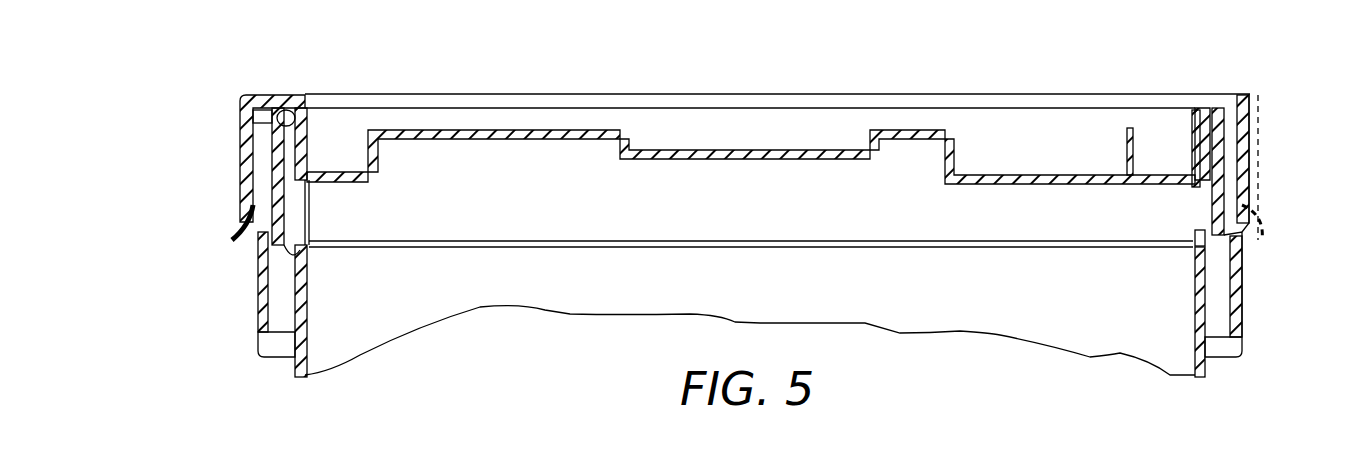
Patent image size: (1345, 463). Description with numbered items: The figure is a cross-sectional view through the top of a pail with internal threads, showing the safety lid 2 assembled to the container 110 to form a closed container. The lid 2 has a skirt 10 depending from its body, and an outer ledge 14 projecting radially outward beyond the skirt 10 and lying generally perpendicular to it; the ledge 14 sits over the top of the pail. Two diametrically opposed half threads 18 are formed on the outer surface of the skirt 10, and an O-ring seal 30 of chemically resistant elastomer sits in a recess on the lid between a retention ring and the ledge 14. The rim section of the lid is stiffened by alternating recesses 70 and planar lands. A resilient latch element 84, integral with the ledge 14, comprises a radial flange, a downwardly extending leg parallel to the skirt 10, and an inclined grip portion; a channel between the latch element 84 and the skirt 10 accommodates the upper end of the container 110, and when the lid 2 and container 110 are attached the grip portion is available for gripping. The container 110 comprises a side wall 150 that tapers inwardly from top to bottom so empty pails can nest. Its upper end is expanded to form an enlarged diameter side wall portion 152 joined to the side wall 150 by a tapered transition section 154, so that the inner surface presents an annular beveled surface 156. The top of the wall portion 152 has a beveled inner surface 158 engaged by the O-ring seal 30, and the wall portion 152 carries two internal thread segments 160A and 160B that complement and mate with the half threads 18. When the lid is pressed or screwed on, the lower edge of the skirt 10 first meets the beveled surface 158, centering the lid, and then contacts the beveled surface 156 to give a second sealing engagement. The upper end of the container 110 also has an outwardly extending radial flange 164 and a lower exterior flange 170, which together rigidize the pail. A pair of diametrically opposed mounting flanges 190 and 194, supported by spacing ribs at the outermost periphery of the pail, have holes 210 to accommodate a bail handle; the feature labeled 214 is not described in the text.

The lid 2 is at (683, 84).
The skirt 10 is at (306, 226).
The outer ledge 14 is at (245, 95).
The half threads 18 is at (296, 192).
The O-ring seal 30 is at (288, 110).
The recesses 70 is at (372, 152).
The latch element 84 is at (238, 166).
The container 110 is at (500, 312).
The side wall 150 is at (307, 318).
The enlarged diameter side wall portion 152 is at (1228, 192).
The tapered transition section 154 is at (1232, 250).
The annular beveled surface 156 is at (290, 262).
The beveled inner surface 158 is at (280, 108).
The thread segment 160A is at (1207, 100).
The thread segment 160B is at (368, 150).
The radial flange 164 is at (262, 118).
The exterior flange 170 is at (252, 211).
The mounting flange 190 is at (260, 316).
The mounting flange 194 is at (1195, 309).
The holes 210 is at (258, 290).
The right seam 214 is at (1195, 277).